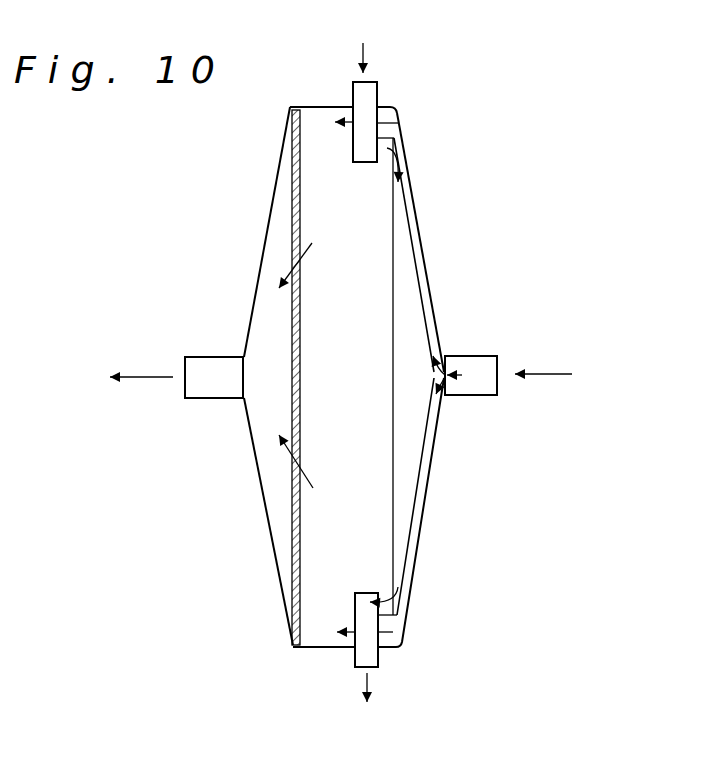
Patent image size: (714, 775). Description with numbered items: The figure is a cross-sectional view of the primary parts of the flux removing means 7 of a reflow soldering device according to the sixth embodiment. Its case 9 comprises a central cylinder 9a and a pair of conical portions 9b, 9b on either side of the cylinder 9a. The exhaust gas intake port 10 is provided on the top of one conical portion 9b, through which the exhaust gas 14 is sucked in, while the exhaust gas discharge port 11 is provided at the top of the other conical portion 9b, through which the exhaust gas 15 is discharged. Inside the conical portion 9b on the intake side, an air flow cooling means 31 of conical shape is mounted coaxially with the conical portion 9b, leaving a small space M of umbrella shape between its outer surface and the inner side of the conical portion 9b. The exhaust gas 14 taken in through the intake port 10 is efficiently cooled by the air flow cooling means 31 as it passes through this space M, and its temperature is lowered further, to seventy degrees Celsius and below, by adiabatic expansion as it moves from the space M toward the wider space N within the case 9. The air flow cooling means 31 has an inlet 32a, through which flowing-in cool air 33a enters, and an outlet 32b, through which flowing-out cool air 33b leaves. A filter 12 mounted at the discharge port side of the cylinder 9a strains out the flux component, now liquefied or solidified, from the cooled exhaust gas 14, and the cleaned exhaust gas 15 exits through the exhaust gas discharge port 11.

The flux removing means 7 is at (433, 276).
The case 9 is at (436, 317).
The cylinder 9a is at (323, 648).
The conical portions 9b is at (258, 473).
The exhaust gas intake port 10 is at (468, 396).
The exhaust gas discharge port 11 is at (208, 398).
The filter 12 is at (300, 130).
The exhaust gas 14 is at (540, 378).
The exhaust gas 15 is at (140, 380).
The air flow cooling means 31 is at (397, 240).
The inlet 32a is at (379, 93).
The outlet 32b is at (380, 657).
The flowing-in cool air 33a is at (379, 41).
The flowing-out cool air 33b is at (384, 708).
The space of umbrella shape M is at (430, 336).
The wider space N is at (356, 388).